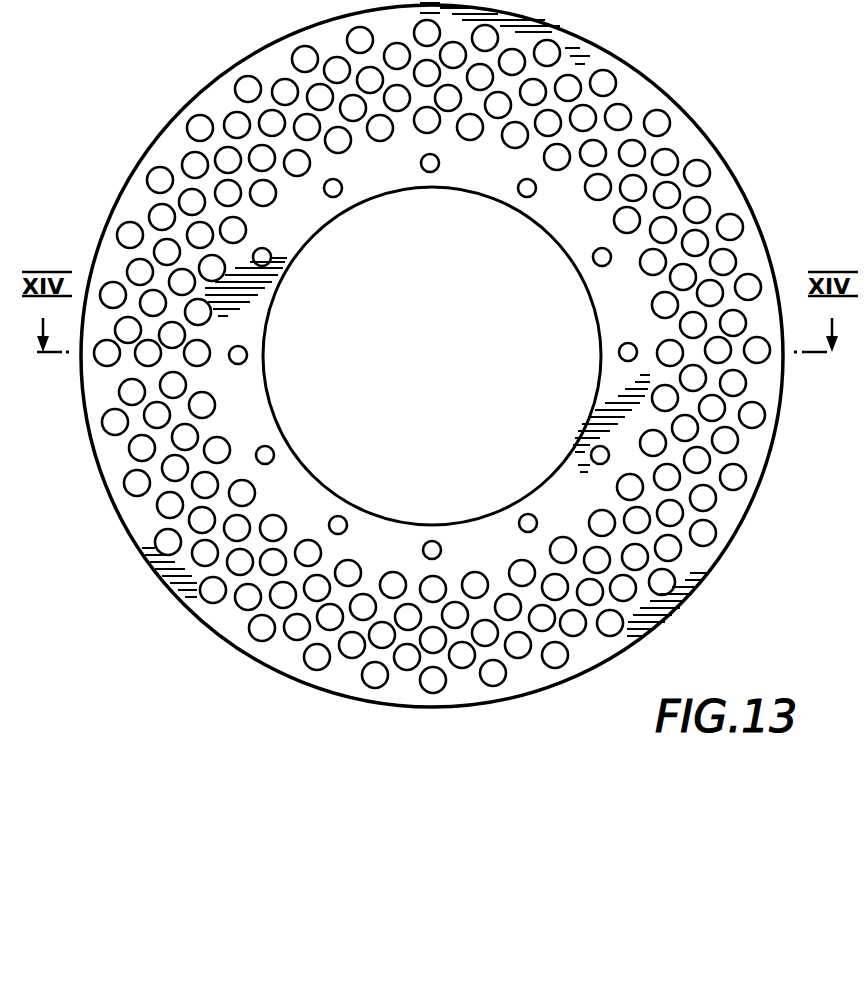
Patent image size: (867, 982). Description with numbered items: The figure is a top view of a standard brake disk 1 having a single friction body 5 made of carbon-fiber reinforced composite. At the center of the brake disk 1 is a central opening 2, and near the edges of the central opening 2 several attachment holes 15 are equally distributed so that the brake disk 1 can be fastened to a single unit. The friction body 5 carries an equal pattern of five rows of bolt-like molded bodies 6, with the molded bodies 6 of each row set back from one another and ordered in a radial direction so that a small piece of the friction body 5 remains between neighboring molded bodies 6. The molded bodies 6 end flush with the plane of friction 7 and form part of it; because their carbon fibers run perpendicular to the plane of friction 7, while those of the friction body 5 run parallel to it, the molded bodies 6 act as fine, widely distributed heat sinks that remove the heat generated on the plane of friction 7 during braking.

The brake disk 1 is at (432, 355).
The central opening 2 is at (517, 243).
The friction body 5 is at (713, 149).
The molded body 6 is at (745, 427).
The plane of friction 7 is at (142, 528).
The attachment holes 15 is at (423, 549).